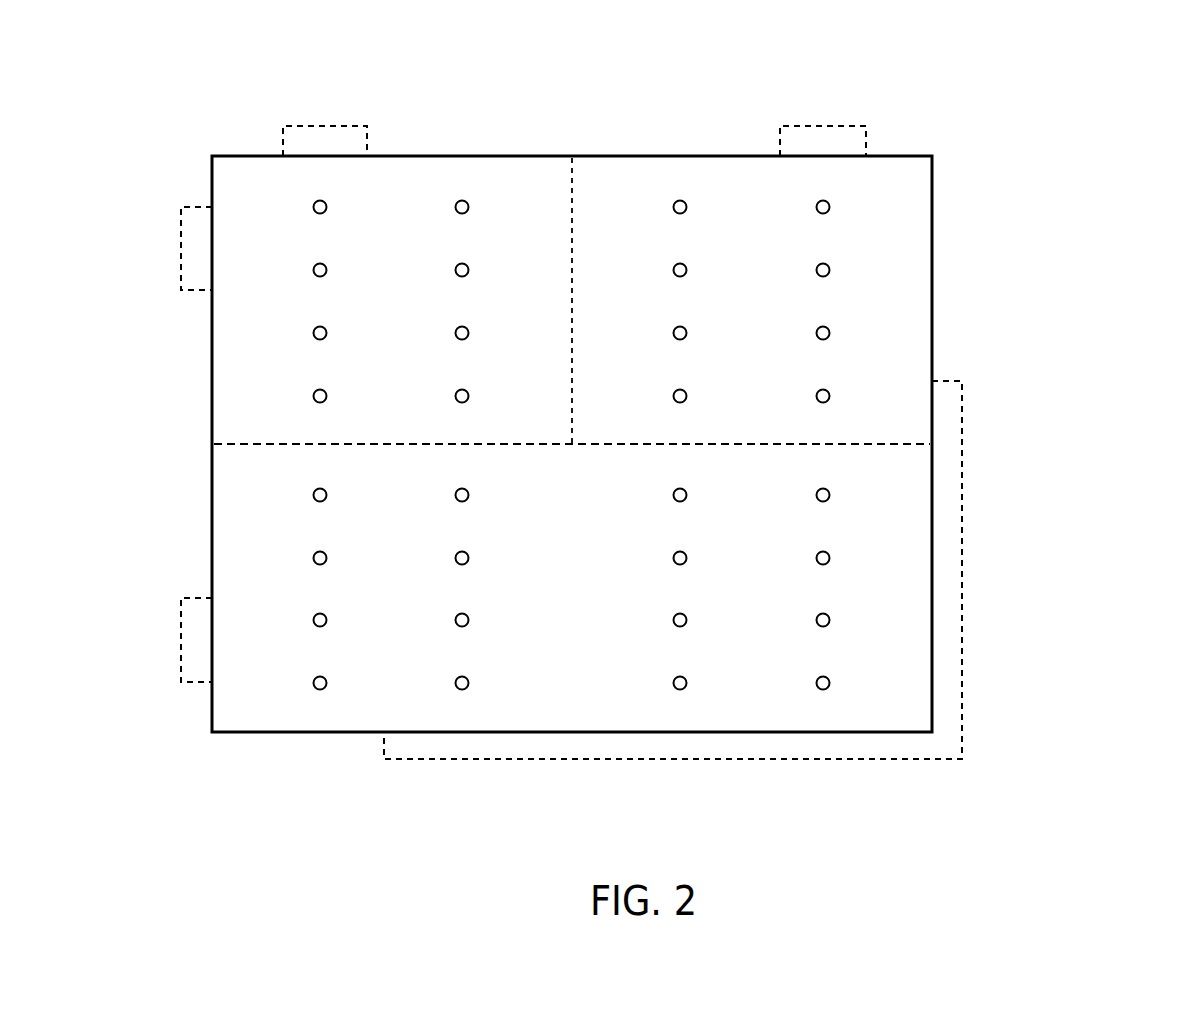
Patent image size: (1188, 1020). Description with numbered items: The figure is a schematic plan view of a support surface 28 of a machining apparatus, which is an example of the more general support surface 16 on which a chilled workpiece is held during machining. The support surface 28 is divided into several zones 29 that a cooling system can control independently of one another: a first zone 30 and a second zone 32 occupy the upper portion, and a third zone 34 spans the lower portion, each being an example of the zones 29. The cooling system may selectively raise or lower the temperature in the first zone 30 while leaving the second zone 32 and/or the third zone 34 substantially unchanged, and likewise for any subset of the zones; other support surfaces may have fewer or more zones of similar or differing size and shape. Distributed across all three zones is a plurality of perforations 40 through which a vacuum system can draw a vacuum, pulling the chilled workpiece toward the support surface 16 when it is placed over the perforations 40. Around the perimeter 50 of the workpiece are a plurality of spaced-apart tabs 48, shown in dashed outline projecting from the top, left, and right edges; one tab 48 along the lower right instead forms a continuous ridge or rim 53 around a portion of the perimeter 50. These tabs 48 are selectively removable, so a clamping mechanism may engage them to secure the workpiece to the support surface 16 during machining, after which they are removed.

The support surface 16 is at (1118, 103).
The support surface 28 is at (579, 441).
The zones 29 is at (422, 200).
The first zone 30 is at (237, 373).
The second zone 32 is at (905, 201).
The third zone 34 is at (893, 665).
The perforations 40 is at (327, 270).
The tabs 48 is at (327, 126).
The perimeter 50 is at (216, 153).
The rim 53 is at (795, 762).